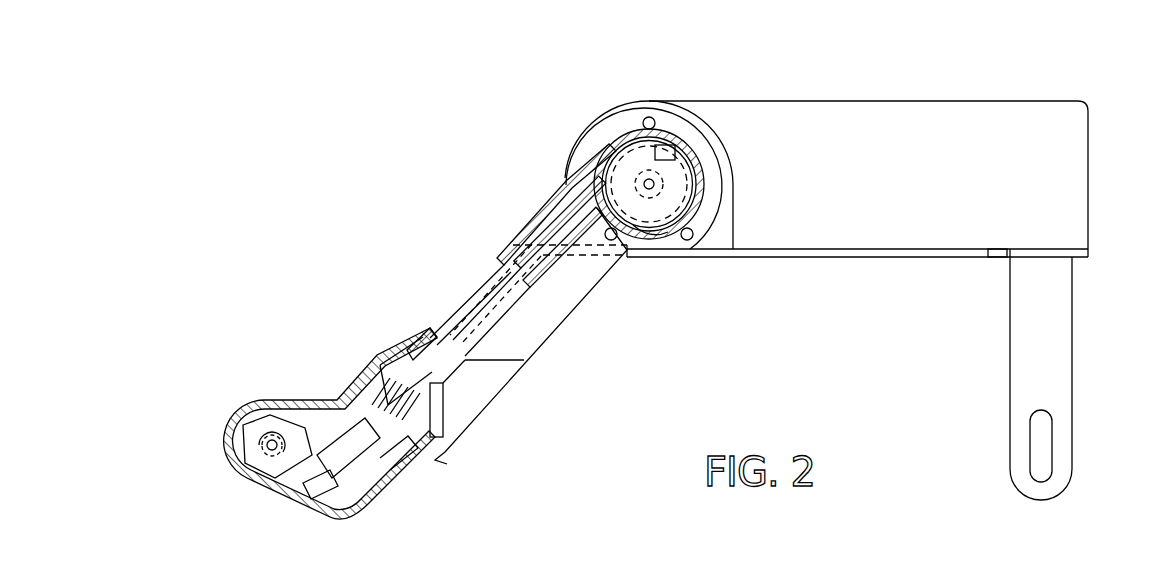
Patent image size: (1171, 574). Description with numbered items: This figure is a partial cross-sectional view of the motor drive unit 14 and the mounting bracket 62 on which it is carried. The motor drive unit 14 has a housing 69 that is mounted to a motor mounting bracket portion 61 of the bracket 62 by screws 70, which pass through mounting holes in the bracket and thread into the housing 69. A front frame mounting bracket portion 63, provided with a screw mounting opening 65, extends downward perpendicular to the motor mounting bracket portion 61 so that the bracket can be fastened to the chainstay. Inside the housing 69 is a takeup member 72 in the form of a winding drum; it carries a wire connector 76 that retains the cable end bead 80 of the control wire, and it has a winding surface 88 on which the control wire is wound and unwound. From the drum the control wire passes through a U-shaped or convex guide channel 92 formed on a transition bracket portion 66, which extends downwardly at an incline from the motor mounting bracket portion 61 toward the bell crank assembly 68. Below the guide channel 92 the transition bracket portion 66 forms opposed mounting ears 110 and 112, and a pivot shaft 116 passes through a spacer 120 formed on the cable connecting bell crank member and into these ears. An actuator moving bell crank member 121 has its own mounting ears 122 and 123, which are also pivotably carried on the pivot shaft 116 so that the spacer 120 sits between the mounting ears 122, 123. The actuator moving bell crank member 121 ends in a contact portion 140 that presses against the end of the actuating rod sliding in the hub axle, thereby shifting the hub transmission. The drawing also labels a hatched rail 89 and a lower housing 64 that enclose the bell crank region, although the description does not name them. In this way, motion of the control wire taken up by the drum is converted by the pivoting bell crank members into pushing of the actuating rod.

The motor drive unit 14 is at (976, 88).
The motor mounting bracket portion 61 is at (791, 252).
The mounting bracket 62 is at (862, 264).
The front frame mounting bracket portion 63 is at (1068, 350).
The lower housing 64 is at (290, 496).
The screw mounting opening 65 is at (1046, 448).
The transition bracket portion 66 is at (565, 318).
The bell crank assembly 68 is at (352, 358).
The housing 69 is at (789, 104).
The screws 70 is at (994, 260).
The takeup member 72 is at (657, 232).
The wire connector 76 is at (676, 153).
The cable end bead 80 is at (658, 148).
The winding surface 88 is at (652, 250).
The rail 89 is at (548, 231).
The guide channel 92 is at (506, 312).
The mounting ear 110 is at (345, 385).
The mounting ear 112 is at (410, 418).
The pivot shaft 116 is at (388, 452).
The spacer 120 is at (373, 450).
The actuator moving bell crank member 121 is at (307, 433).
The mounting ear 122 is at (380, 362).
The mounting ear 123 is at (430, 421).
The contact portion 140 is at (262, 441).